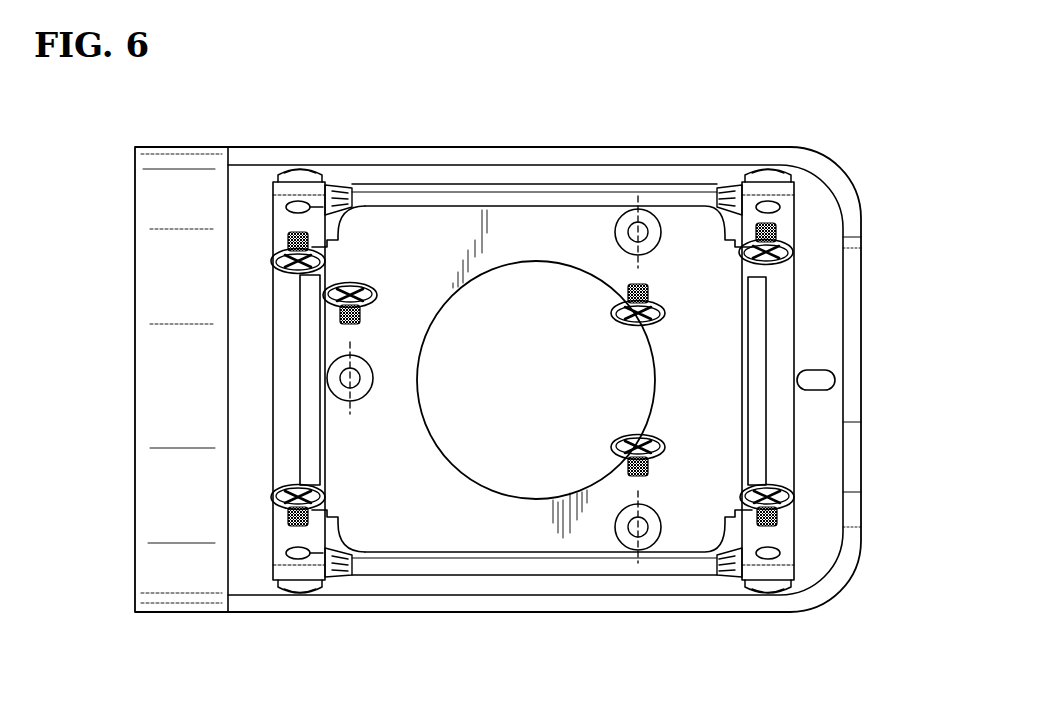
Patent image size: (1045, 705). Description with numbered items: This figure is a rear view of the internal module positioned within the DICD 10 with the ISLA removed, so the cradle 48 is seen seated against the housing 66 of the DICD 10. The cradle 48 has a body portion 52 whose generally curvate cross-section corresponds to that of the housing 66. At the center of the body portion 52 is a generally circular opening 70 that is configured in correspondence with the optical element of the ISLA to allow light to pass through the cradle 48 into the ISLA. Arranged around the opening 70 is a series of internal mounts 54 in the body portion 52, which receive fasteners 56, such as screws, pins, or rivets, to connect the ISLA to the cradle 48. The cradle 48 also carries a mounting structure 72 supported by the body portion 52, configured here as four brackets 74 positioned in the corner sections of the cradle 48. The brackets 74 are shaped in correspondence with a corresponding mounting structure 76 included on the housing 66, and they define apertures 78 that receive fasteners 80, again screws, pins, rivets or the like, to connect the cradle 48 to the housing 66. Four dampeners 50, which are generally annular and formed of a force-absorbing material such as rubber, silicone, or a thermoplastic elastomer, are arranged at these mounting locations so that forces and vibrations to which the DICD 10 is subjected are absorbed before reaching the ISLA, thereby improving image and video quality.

The DICD 10 is at (722, 144).
The cradle 48 is at (811, 307).
The dampeners 50 is at (283, 162).
The body portion 52 is at (695, 378).
The internal mounts 54 is at (614, 236).
The fasteners 56 is at (655, 302).
The housing 66 is at (246, 158).
The opening 70 is at (617, 367).
The mounting structure 72 is at (262, 195).
The brackets 74 is at (320, 188).
The mounting structure 76 is at (313, 178).
The apertures 78 is at (346, 214).
The fasteners 80 is at (272, 262).